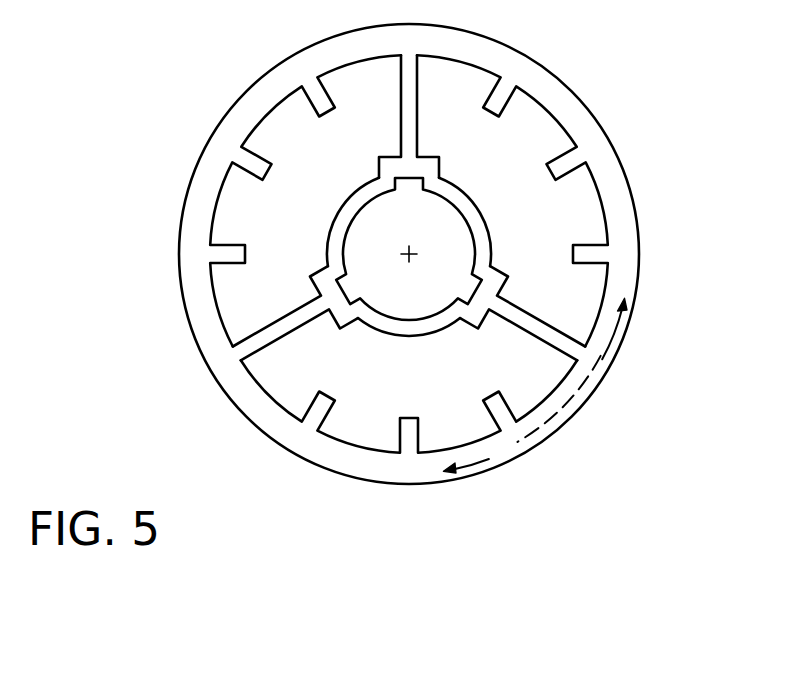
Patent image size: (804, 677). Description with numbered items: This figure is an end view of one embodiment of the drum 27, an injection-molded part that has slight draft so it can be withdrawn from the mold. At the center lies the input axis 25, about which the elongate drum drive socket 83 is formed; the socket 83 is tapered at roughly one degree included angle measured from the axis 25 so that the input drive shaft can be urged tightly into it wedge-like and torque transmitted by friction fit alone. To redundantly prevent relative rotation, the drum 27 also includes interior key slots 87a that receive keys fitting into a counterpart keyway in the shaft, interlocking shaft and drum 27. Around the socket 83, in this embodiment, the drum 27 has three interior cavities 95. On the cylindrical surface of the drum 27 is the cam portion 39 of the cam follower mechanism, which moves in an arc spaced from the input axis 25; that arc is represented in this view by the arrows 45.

The drum 27 is at (157, 213).
The interior cavities 95 is at (367, 420).
The drum drive socket 83 is at (347, 252).
The interior key slot 87a is at (353, 285).
The input axis 25 is at (412, 249).
The cam portion 39 is at (563, 413).
The arrows 45 is at (622, 334).